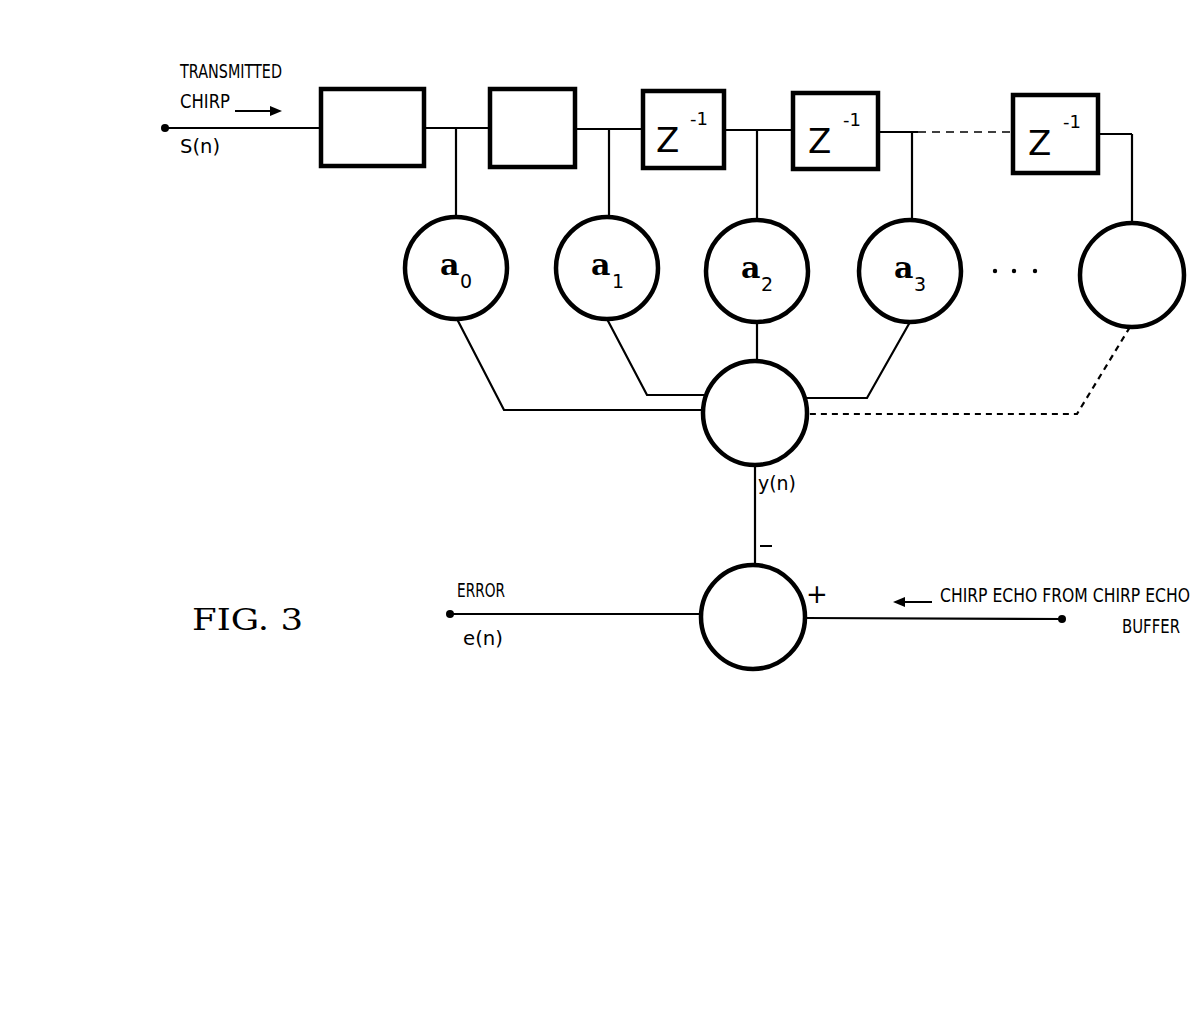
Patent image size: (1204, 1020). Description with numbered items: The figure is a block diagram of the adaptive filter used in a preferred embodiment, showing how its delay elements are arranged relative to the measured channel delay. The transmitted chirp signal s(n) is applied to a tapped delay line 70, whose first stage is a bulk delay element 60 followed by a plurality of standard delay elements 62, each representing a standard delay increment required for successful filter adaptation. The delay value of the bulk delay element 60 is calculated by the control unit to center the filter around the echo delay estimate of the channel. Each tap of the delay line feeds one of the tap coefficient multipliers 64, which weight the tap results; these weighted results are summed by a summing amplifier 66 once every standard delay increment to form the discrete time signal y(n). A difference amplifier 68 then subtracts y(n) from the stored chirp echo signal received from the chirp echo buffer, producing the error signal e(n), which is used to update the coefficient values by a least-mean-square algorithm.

The bulk delay element 60 is at (393, 89).
The standard delay elements 62 is at (543, 88).
The tap coefficient multipliers 64 is at (1093, 235).
The summing amplifier 66 is at (720, 452).
The difference amplifier 68 is at (715, 655).
The tapped delay line 70 is at (626, 122).